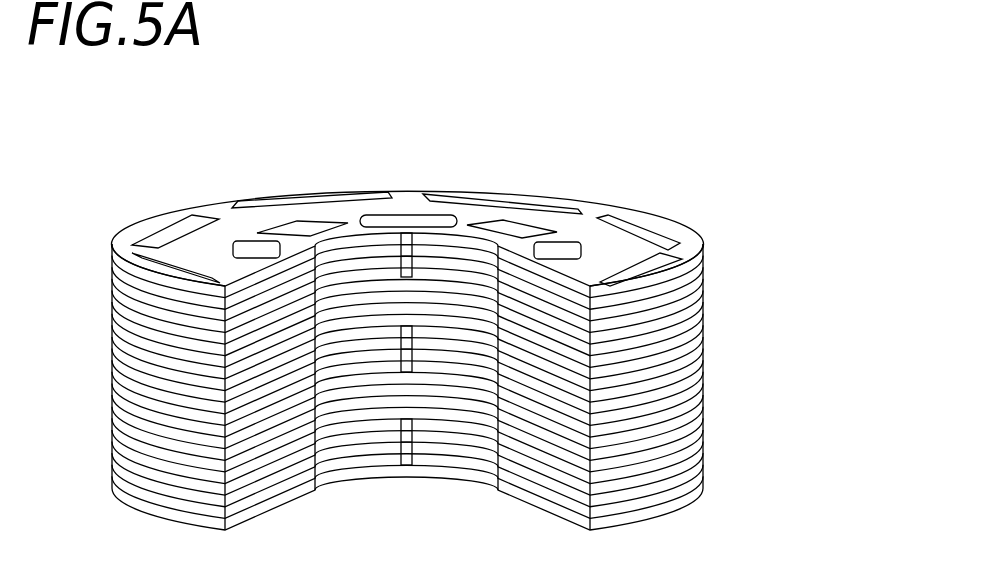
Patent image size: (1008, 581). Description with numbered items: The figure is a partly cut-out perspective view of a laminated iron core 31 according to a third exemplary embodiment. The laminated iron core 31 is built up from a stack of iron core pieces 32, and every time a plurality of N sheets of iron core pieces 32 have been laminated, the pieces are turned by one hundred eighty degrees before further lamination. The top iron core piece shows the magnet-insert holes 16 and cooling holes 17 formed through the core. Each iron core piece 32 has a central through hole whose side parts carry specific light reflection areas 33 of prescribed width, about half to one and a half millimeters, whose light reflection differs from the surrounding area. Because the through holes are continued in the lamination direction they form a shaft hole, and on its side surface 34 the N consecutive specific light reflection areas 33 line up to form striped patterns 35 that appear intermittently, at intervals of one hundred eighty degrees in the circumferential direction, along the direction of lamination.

The magnet-insert hole 16 is at (571, 210).
The cooling hole 17 is at (560, 246).
The laminated iron core 31 is at (398, 142).
The iron core pieces 32 is at (704, 488).
The specific light reflection areas 33 is at (406, 465).
The side surface of shaft hole 34 is at (458, 479).
The striped patterns 35 is at (396, 258).